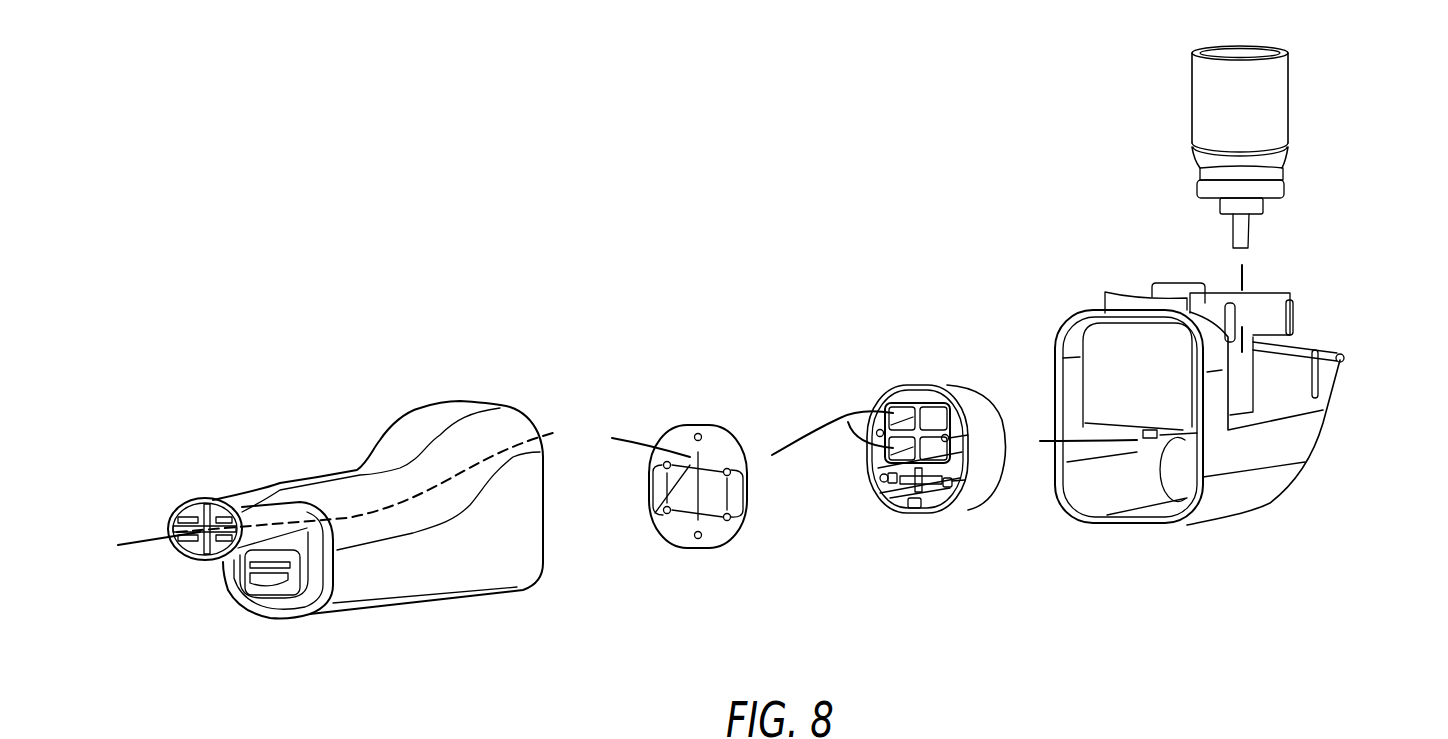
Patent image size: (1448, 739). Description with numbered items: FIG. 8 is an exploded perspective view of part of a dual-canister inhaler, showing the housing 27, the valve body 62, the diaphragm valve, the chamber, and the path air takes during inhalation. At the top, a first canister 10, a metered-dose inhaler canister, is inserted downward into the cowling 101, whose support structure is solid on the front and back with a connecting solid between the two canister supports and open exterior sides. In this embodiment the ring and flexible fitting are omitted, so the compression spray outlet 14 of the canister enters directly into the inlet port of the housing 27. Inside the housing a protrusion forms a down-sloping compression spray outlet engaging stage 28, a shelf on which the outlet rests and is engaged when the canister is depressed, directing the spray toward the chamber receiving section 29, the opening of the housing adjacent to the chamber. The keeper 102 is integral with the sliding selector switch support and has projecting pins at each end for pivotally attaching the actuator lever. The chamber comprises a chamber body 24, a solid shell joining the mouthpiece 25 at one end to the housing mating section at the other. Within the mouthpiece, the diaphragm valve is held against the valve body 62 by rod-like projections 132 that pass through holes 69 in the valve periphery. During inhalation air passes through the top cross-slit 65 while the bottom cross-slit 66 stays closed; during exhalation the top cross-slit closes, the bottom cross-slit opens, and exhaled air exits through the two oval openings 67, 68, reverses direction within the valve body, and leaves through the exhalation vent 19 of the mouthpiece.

The first canister 10 is at (1285, 88).
The compression spray outlet 14 is at (1249, 230).
The exhalation vent 19 is at (263, 588).
The chamber body 24 is at (385, 610).
The mouthpiece 25 is at (208, 497).
The housing 27 is at (1223, 517).
The compression spray outlet engaging stage 28 is at (1173, 473).
The chamber receiving section 29 is at (1062, 362).
The valve body 62 is at (968, 508).
The top cross-slit 65 is at (658, 507).
The bottom cross-slit 66 is at (687, 517).
The oval opening 67 is at (740, 495).
The oval opening 68 is at (655, 485).
The hole in the periphery of the diaphragm valve 69 is at (700, 440).
The cowling 101 is at (1290, 297).
The keeper 102 is at (1350, 357).
The rod-like projection 132 is at (913, 508).